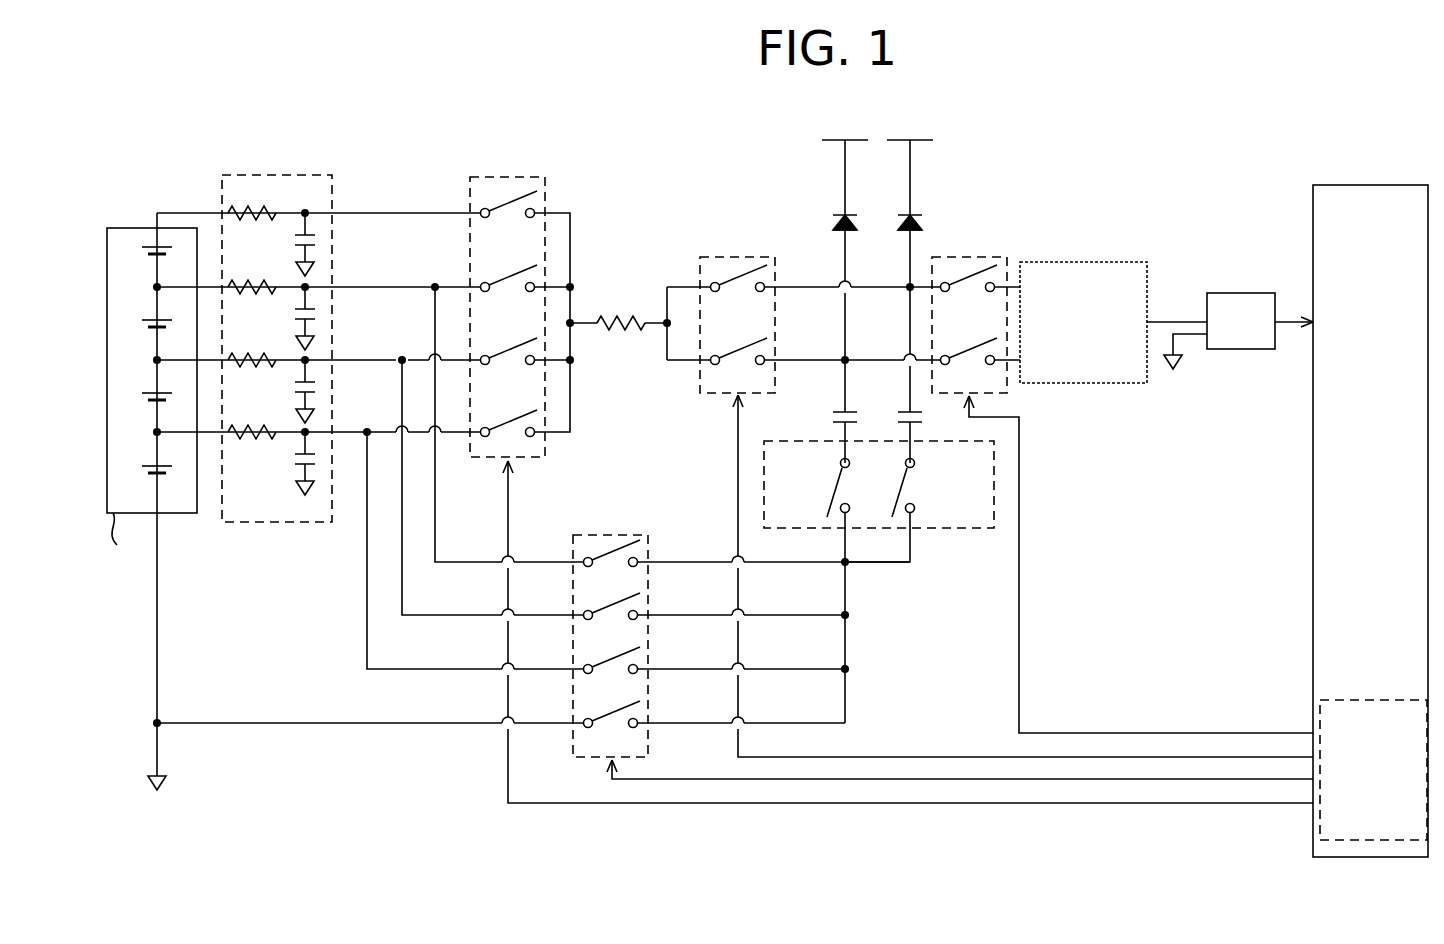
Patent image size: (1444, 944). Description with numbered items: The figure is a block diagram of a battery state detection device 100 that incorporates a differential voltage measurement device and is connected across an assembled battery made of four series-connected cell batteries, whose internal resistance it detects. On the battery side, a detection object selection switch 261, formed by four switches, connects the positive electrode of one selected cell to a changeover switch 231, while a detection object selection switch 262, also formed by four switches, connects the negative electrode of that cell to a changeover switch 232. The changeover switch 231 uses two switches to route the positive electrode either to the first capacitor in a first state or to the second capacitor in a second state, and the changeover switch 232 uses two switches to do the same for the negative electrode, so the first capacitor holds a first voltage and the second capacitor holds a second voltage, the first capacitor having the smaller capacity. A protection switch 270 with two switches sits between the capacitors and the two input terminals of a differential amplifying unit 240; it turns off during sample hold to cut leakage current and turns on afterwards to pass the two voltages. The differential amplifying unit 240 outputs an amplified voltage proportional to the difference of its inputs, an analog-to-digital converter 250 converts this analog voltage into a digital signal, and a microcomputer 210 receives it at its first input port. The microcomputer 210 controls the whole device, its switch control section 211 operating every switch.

The battery state detection device 100 is at (195, 105).
The μCOM 210 is at (1350, 185).
The switch control section 211 is at (1370, 700).
The changeover switch 231 is at (718, 257).
The changeover switch 232 is at (944, 530).
The differential amplifying unit 240 is at (1075, 262).
The ADC 250 is at (1238, 349).
The detection object selection switch 261 is at (522, 177).
The detection object selection switch 262 is at (600, 535).
The protection switch 270 is at (956, 257).